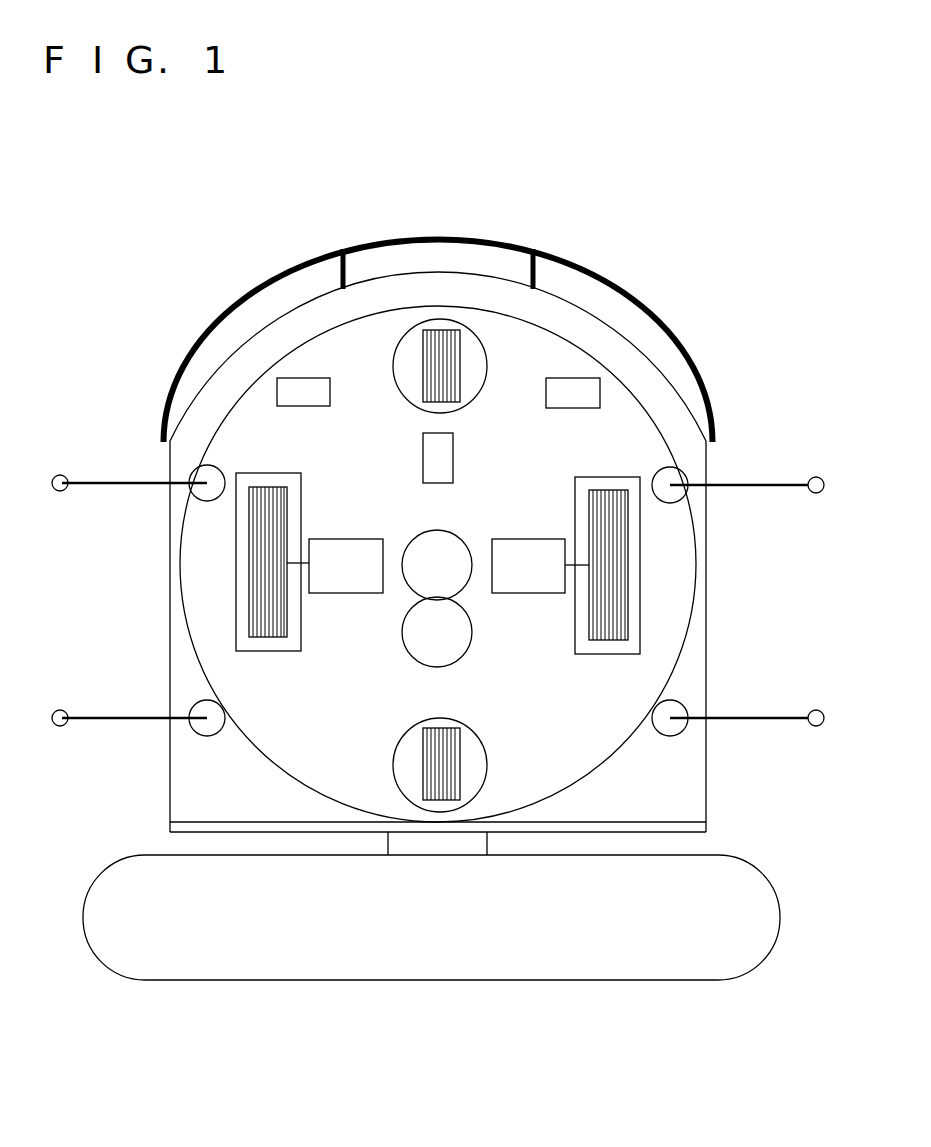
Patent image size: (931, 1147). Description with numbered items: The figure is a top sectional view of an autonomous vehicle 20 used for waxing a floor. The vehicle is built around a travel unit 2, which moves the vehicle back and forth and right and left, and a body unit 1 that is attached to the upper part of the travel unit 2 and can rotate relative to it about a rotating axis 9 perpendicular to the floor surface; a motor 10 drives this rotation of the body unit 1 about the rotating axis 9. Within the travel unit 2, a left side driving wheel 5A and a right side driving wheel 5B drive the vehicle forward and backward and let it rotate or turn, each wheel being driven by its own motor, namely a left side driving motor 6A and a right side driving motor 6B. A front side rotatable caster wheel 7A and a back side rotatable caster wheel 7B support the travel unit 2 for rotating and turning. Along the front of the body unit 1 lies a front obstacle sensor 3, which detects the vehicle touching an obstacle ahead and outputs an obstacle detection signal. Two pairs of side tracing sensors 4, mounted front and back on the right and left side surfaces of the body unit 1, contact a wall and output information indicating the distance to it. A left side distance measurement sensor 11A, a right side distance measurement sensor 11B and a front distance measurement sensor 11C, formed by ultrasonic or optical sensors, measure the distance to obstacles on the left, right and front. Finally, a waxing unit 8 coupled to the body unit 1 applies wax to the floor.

The body unit 1 is at (673, 408).
The travel unit 2 is at (555, 360).
The front obstacle sensor 3 is at (580, 267).
The side tracing sensors 4 is at (100, 464).
The left side driving wheel 5A is at (255, 568).
The right side driving wheel 5B is at (618, 548).
The left side driving motor 6A is at (348, 538).
The right side driving motor 6B is at (534, 538).
The front side rotatable caster wheel 7A is at (432, 330).
The back side rotatable caster wheel 7B is at (460, 766).
The waxing unit 8 is at (763, 893).
The rotating axis 9 is at (465, 583).
The motor 10 is at (406, 648).
The left side distance measurement sensor 11A is at (285, 392).
The right side distance measurement sensor 11B is at (602, 388).
The front distance measurement sensor 11C is at (445, 451).
The autonomous vehicle 20 is at (684, 190).